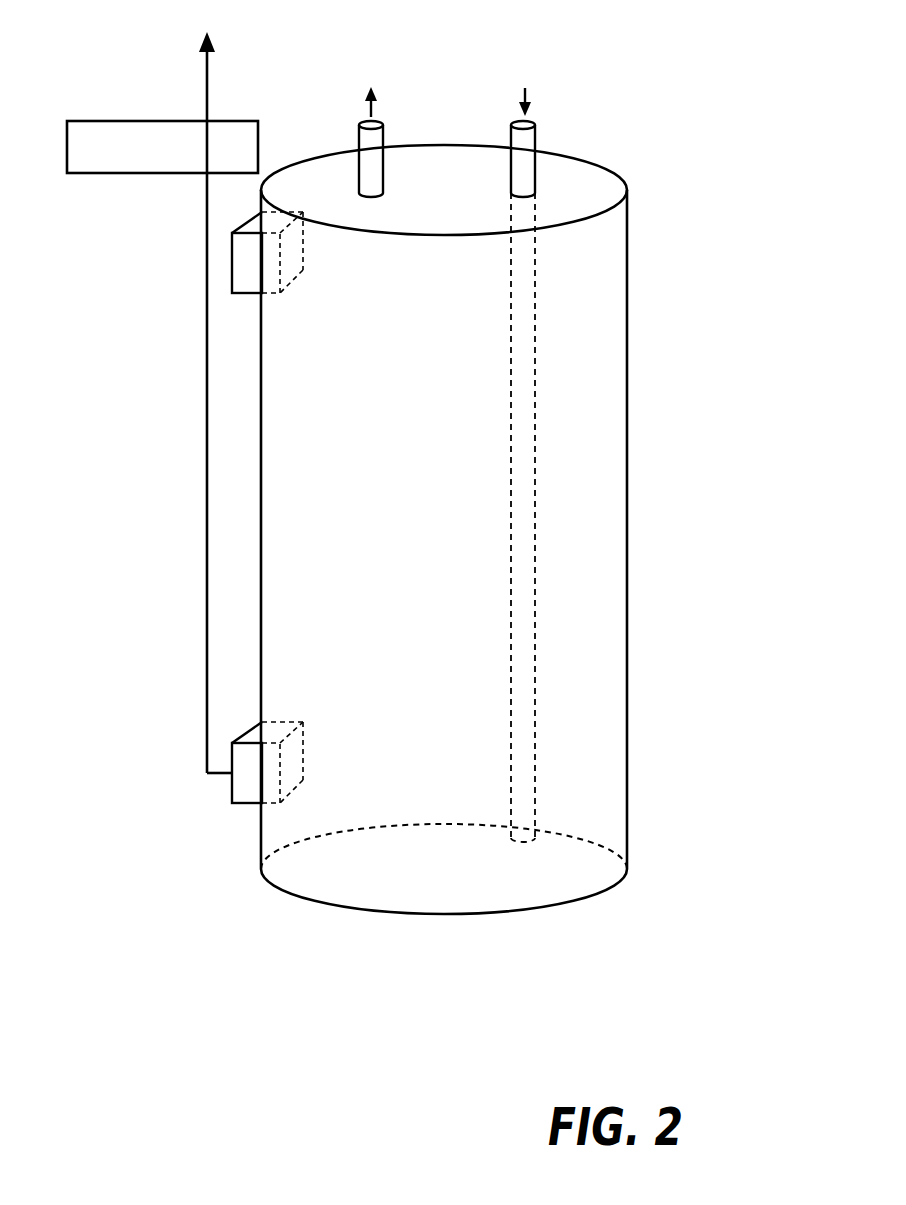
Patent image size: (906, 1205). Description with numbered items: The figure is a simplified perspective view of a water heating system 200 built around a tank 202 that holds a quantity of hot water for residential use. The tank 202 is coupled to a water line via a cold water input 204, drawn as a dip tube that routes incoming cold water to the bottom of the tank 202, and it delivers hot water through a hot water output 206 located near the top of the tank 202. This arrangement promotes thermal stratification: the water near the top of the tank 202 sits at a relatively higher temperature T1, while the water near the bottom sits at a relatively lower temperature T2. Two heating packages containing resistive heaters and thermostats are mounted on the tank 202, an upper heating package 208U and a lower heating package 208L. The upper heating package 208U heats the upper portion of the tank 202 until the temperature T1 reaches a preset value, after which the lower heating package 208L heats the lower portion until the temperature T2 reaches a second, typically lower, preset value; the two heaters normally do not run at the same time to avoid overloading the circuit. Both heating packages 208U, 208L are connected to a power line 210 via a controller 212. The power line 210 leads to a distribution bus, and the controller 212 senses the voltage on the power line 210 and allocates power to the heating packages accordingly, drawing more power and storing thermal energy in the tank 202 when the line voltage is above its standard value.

The water heating system 200 is at (212, 964).
The tank 202 is at (627, 503).
The cold water input 204 is at (535, 133).
The hot water output 206 is at (383, 133).
The upper heating package 208U is at (242, 293).
The lower heating package 208L is at (242, 803).
The power line 210 is at (207, 90).
The controller 212 is at (67, 154).
The temperature T1 is at (578, 280).
The temperature T2 is at (578, 792).